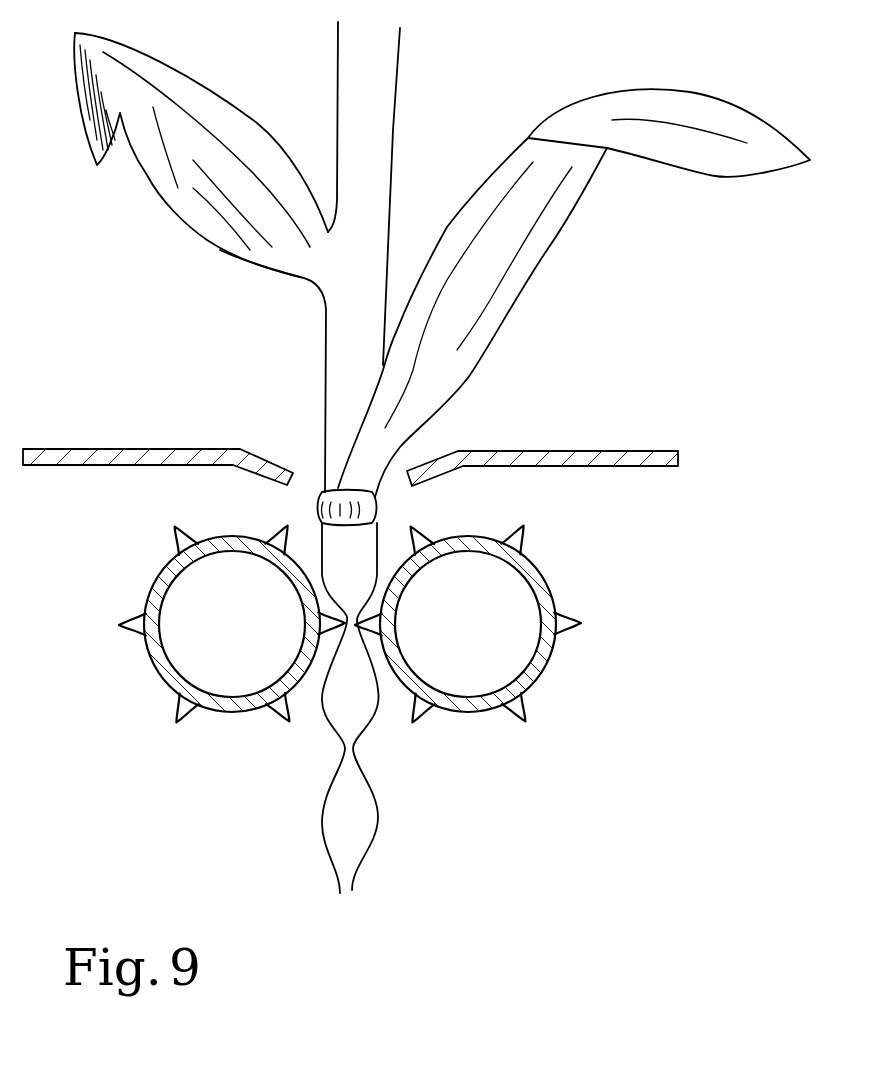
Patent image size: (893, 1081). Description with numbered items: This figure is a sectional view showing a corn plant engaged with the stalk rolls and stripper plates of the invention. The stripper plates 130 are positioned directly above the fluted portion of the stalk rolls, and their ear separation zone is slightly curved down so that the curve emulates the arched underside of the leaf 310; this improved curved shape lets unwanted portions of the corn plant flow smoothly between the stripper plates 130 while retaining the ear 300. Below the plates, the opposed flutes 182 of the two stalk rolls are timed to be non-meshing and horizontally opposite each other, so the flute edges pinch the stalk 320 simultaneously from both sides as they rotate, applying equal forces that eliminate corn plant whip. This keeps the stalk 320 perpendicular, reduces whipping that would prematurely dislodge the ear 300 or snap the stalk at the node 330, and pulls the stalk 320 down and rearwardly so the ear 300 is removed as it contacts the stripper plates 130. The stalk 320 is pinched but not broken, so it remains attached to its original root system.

The ear 300 is at (260, 250).
The leaf 310 is at (485, 247).
The stalk 320 is at (345, 392).
The node 330 is at (373, 510).
The stripper plates 130 is at (637, 466).
The opposed flutes 182 is at (578, 626).